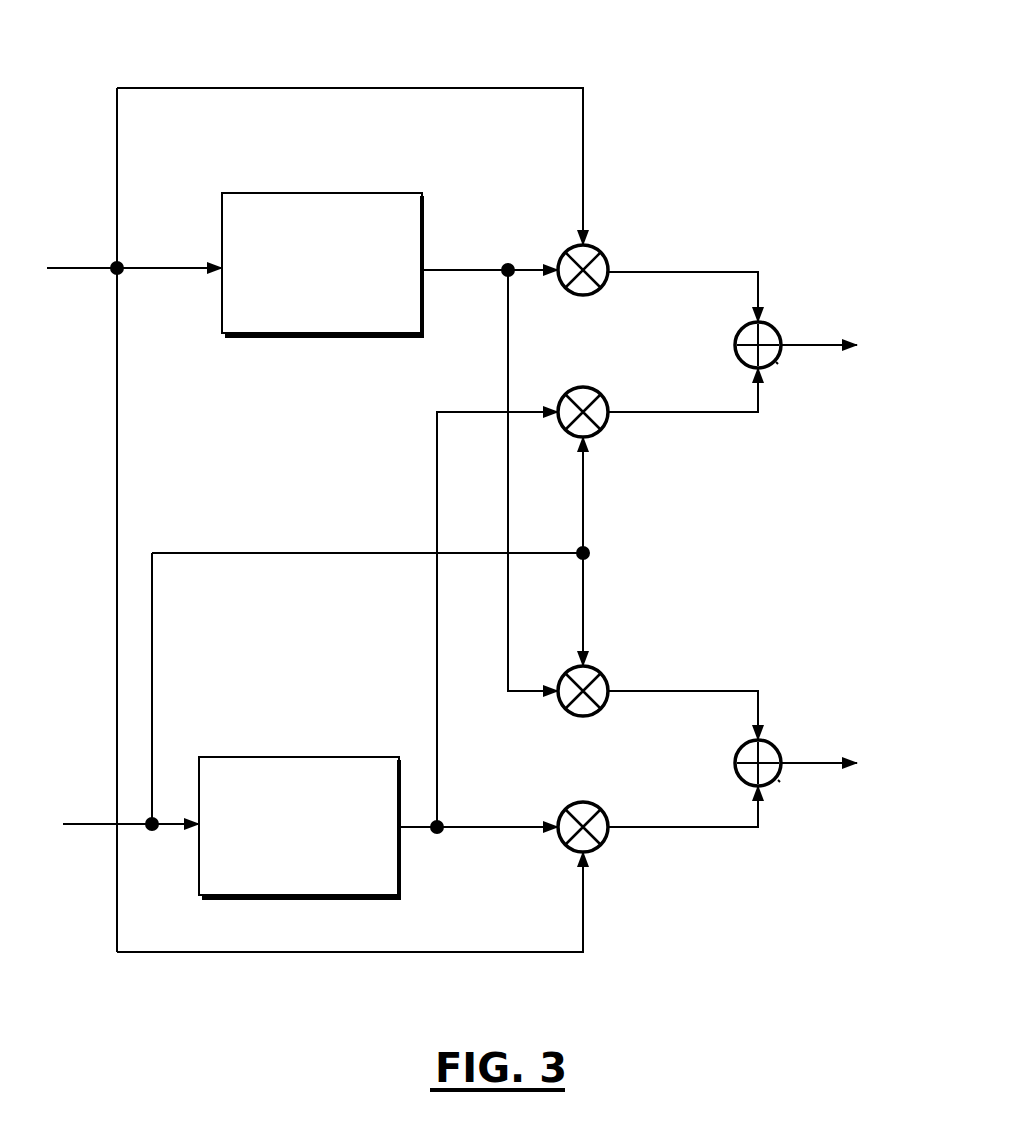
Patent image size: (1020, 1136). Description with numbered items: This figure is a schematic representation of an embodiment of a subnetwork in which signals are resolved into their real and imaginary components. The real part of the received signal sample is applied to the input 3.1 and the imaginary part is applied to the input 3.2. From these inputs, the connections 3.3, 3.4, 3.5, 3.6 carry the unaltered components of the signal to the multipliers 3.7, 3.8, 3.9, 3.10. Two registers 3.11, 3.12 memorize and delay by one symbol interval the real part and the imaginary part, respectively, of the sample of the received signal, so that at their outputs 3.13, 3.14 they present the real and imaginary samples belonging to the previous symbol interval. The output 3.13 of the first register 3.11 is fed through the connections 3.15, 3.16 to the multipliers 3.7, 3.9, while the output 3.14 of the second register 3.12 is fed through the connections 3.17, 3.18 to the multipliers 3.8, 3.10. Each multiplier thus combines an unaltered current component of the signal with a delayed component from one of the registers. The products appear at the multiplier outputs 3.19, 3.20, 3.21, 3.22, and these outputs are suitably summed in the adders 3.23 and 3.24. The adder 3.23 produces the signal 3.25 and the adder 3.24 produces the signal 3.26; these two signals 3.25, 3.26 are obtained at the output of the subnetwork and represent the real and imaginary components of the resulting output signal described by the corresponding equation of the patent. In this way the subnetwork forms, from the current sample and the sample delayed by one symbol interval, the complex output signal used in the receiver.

The input 3.1 is at (80, 274).
The input 3.2 is at (78, 822).
The connection 3.3 is at (143, 88).
The connection 3.4 is at (117, 490).
The connection 3.5 is at (585, 496).
The connection 3.6 is at (585, 628).
The multiplier 3.7 is at (604, 252).
The multiplier 3.8 is at (606, 392).
The multiplier 3.9 is at (606, 712).
The multiplier 3.10 is at (608, 858).
The register 3.11 is at (242, 193).
The register 3.12 is at (272, 757).
The output 3.13 is at (450, 268).
The output 3.14 is at (414, 830).
The connection 3.15 is at (527, 268).
The connection 3.16 is at (508, 644).
The connection 3.17 is at (437, 488).
The connection 3.18 is at (512, 830).
The multiplier output 3.19 is at (761, 271).
The multiplier output 3.20 is at (722, 418).
The multiplier output 3.21 is at (738, 693).
The multiplier output 3.22 is at (734, 830).
The adder 3.23 is at (778, 362).
The adder 3.24 is at (780, 782).
The output signal 3.25 is at (806, 344).
The output signal 3.26 is at (810, 762).